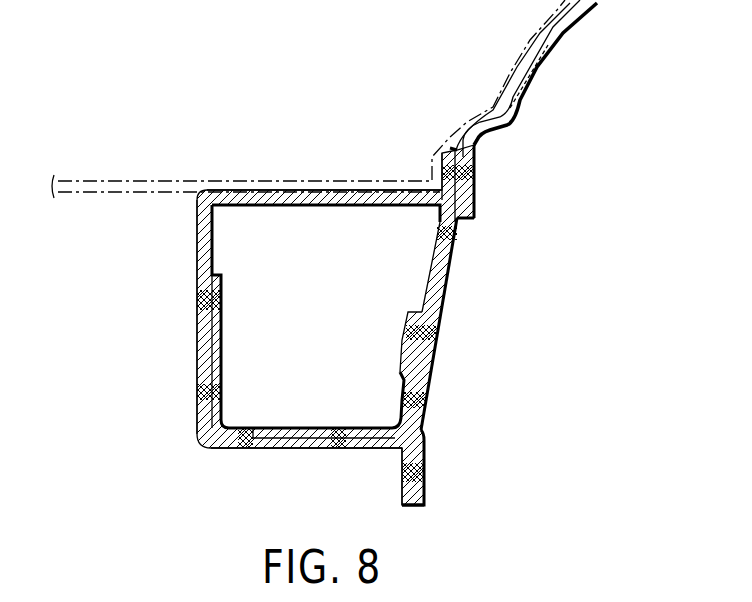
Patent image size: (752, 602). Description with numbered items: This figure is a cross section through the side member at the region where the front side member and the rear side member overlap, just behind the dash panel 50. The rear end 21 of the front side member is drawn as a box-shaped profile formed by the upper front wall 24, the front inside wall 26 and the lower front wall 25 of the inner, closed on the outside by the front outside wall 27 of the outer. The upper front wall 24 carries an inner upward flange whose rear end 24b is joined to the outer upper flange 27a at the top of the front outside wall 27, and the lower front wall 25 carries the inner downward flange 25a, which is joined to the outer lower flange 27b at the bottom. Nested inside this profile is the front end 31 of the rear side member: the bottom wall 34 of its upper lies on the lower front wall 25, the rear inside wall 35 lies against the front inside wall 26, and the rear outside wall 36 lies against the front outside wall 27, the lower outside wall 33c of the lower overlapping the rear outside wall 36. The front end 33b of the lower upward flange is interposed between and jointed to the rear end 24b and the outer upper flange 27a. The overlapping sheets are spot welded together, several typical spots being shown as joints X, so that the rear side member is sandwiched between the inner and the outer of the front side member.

The dash panel 50 is at (126, 180).
The rear end of the front side member 21 is at (257, 196).
The upper front wall 24 is at (303, 206).
The rear end of the inner upward flange 24b is at (437, 155).
The outer upper flange 27a is at (477, 158).
The front end of the lower upward flange 33b is at (470, 198).
The front inside wall 26 is at (197, 240).
The lower outside wall 33c is at (430, 267).
The rear inside wall 35 is at (223, 318).
The front outside wall 27 is at (447, 292).
The rear outside wall 36 is at (402, 350).
The front end of the rear side member 31 is at (222, 410).
The bottom wall 34 is at (297, 428).
The lower front wall 25 is at (283, 450).
The inner downward flange 25a is at (402, 497).
The outer lower flange 27b is at (427, 443).
The joints X is at (442, 173).